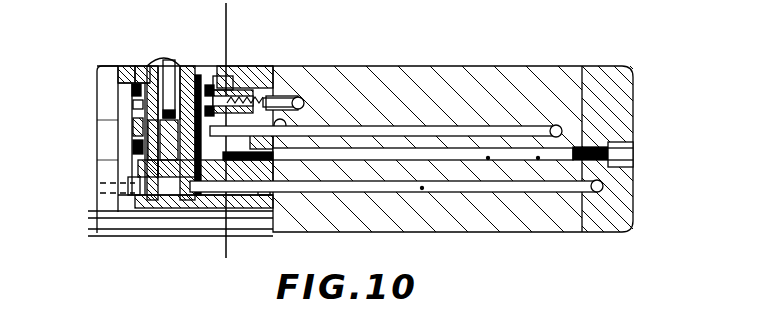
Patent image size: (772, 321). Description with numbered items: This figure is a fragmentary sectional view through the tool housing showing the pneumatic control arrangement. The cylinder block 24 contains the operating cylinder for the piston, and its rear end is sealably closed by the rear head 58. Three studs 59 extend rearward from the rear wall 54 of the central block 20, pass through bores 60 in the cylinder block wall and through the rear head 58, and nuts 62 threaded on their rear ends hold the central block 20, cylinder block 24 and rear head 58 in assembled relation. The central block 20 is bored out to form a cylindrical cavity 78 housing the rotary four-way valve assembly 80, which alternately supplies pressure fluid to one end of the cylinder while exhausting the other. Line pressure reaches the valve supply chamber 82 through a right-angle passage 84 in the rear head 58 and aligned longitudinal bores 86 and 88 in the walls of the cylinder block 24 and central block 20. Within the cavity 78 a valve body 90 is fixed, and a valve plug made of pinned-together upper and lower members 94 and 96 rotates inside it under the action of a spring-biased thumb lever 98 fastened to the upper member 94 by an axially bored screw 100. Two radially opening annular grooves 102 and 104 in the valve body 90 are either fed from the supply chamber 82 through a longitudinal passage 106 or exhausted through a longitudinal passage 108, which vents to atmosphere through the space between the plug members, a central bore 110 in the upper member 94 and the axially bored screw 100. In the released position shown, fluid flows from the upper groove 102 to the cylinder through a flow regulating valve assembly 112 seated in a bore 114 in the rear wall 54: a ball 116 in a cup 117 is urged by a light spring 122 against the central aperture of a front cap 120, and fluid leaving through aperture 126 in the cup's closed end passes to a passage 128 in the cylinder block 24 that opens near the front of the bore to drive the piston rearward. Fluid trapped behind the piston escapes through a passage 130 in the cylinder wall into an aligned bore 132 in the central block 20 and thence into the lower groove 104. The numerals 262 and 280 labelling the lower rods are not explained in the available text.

The central block 20 is at (262, 12).
The cylinder block 24 is at (502, 67).
The rear wall 54 is at (228, 77).
The rear head 58 is at (636, 72).
The studs 59 is at (538, 158).
The bores 60 is at (488, 158).
The nuts 62 is at (637, 152).
The cylindrical cavity 78 is at (133, 163).
The rotary four-way valve assembly 80 is at (143, 77).
The valve supply chamber 82 is at (130, 183).
The right-angle passage 84 is at (603, 190).
The longitudinal bore 86 is at (422, 188).
The longitudinal bore 88 is at (135, 188).
The valve body 90 is at (133, 108).
The upper valve plug member 94 is at (187, 64).
The lower valve plug member 96 is at (173, 183).
The thumb lever 98 is at (128, 73).
The axially bored screw 100 is at (148, 70).
The upper annular groove 102 is at (133, 97).
The lower annular groove 104 is at (135, 133).
The longitudinal passage 106 is at (200, 178).
The longitudinal passage 108 is at (133, 147).
The central bore 110 is at (148, 183).
The flow regulating valve assembly 112 is at (255, 78).
The bore 114 is at (285, 80).
The ball 116 is at (221, 80).
The cup 117 is at (278, 162).
The front cap 120 is at (218, 70).
The light spring 122 is at (248, 72).
The aperture 126 is at (268, 68).
The passage 128 is at (300, 90).
The passage 130 is at (442, 128).
The bore 132 is at (286, 126).
The lower rod 262 is at (93, 214).
The lower rod 280 is at (97, 235).